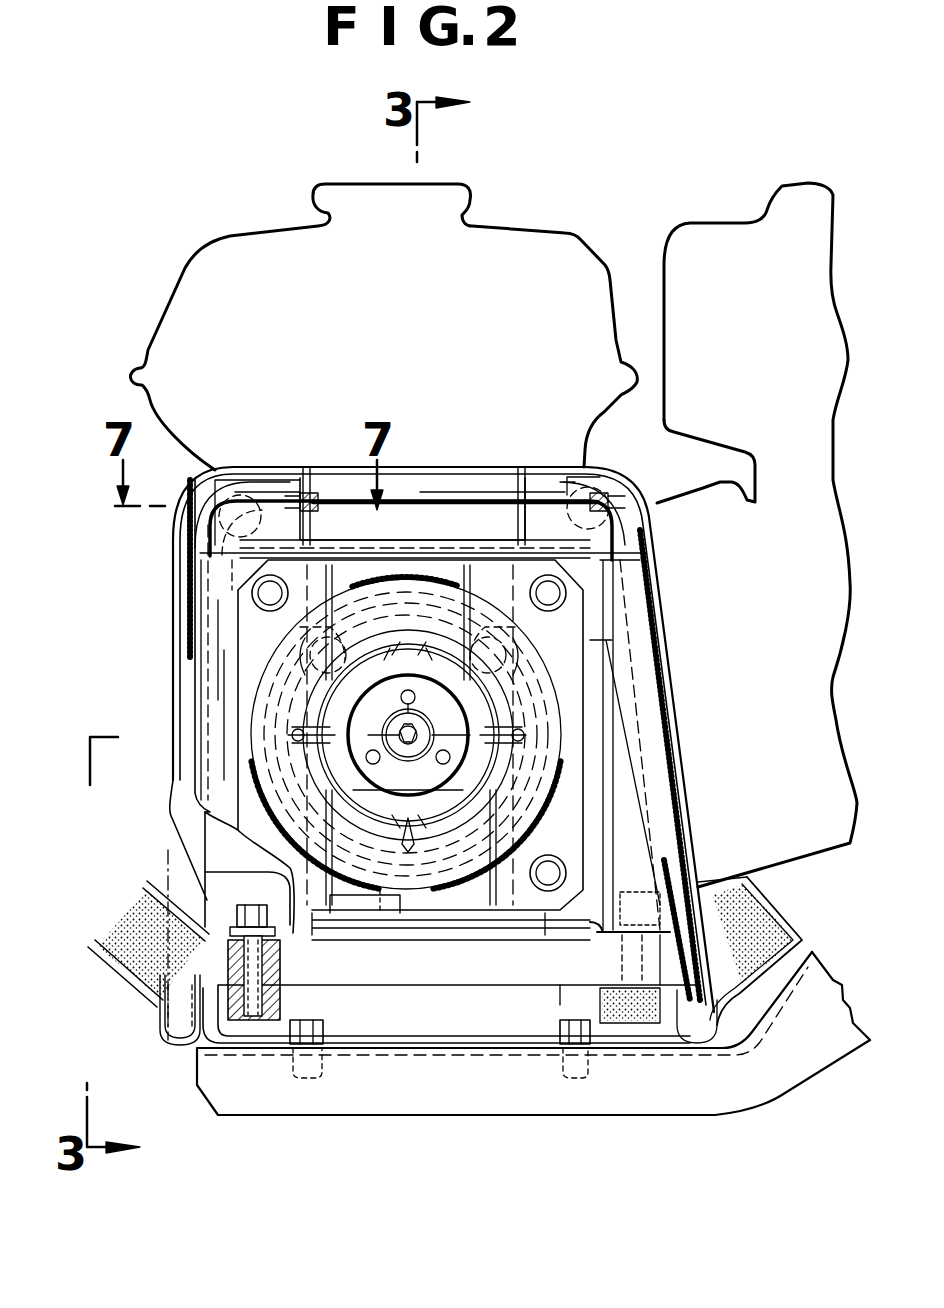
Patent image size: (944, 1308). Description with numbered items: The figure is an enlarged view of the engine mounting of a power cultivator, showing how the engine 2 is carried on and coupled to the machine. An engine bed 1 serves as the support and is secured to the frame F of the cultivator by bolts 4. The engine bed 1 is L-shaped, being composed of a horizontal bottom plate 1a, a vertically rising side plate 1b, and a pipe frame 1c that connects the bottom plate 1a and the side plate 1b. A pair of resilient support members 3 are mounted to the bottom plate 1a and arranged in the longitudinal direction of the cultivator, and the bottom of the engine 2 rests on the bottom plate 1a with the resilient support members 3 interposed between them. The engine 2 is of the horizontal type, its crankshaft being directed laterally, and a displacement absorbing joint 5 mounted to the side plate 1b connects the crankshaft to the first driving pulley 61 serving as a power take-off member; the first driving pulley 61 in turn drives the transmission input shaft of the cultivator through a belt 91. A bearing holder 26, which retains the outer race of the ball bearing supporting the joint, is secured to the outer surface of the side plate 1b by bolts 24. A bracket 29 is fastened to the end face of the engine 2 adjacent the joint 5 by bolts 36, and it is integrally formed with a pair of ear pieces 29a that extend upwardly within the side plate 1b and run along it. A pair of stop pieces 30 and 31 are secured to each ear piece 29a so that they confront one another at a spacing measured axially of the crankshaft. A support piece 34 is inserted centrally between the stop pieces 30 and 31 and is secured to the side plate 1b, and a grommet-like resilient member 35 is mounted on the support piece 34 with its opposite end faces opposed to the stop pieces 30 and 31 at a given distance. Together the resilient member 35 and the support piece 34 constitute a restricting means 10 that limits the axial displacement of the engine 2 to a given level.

The engine bed 1 is at (686, 724).
The bottom plate 1a is at (446, 1050).
The side plate 1b is at (640, 782).
The pipe frame 1c is at (666, 656).
The engine 2 is at (420, 968).
The resilient support member 3 is at (140, 936).
The bolt 4 is at (316, 1022).
The displacement absorbing joint 5 is at (250, 690).
The restricting means 10 is at (205, 477).
The bolt 24 is at (272, 590).
The bearing holder 26 is at (470, 902).
The bracket 29 is at (428, 540).
The ear piece 29a is at (308, 485).
The stop piece 30 is at (405, 503).
The stop piece 31 is at (235, 520).
The support piece 34 is at (258, 482).
The resilient member 35 is at (236, 476).
The bolt 36 is at (318, 650).
The first driving pulley 61 is at (380, 896).
The belt 91 is at (676, 836).
The frame F is at (806, 1072).